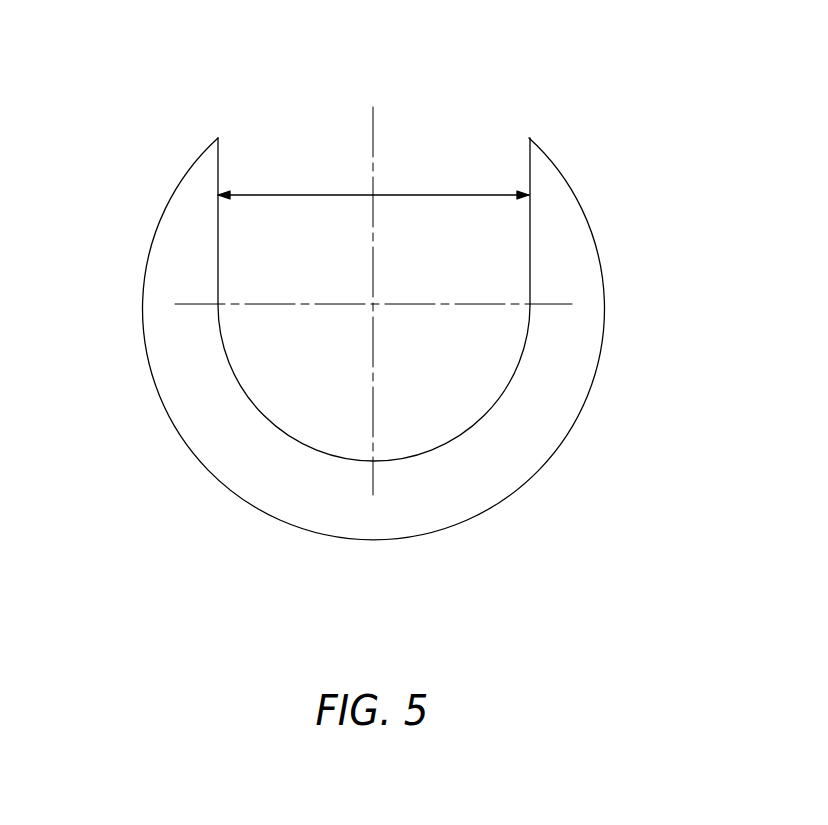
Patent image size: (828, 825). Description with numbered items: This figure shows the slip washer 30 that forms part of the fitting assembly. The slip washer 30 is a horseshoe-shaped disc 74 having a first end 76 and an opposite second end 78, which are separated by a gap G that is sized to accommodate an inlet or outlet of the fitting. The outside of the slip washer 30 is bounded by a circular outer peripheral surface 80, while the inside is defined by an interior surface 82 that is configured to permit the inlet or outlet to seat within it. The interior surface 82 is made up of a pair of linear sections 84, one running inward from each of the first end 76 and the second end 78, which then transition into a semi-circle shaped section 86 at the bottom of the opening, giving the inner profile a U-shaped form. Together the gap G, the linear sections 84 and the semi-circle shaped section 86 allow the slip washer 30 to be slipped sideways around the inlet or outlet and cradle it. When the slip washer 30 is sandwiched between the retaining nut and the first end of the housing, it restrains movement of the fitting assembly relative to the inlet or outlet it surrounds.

The slip washer 30 is at (613, 47).
The horseshoe-shaped disc 74 is at (247, 503).
The first end 76 is at (218, 138).
The second end 78 is at (529, 138).
The circular outer peripheral surface 80 is at (600, 368).
The interior surface 82 is at (437, 448).
The linear sections 84 is at (529, 274).
The semi-circle shaped section 86 is at (283, 428).
The gap G is at (310, 195).